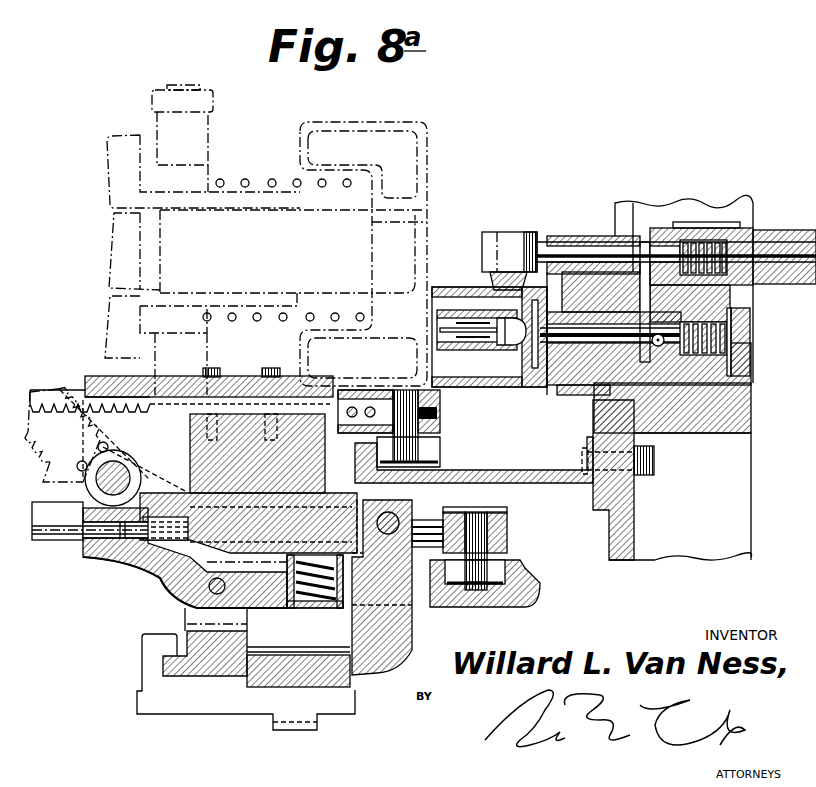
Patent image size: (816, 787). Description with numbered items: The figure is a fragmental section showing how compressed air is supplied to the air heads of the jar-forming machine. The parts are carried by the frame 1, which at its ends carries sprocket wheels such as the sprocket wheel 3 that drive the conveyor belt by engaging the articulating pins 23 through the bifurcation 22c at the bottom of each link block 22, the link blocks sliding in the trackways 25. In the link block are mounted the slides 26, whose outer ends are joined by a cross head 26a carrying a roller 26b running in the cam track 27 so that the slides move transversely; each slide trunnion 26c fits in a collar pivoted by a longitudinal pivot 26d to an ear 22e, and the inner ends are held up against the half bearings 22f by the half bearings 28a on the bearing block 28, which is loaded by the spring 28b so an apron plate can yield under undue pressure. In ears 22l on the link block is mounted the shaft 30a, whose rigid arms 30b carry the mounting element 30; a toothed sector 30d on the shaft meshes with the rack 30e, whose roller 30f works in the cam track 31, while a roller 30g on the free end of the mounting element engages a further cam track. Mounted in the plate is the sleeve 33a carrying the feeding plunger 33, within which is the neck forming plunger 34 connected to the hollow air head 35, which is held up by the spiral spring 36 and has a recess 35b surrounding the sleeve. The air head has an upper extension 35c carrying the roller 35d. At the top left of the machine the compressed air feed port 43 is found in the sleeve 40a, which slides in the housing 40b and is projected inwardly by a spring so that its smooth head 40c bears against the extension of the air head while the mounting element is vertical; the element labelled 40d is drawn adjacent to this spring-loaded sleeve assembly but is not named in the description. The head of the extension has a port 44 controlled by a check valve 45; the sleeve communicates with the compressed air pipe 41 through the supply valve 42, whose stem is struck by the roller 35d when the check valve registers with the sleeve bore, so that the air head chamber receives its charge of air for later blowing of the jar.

The frame 1 is at (738, 519).
The sprocket wheel 3 is at (273, 729).
The link block 22 is at (163, 667).
The bifurcation 22c is at (391, 620).
The ear 22e is at (389, 499).
The half bearing 22f is at (124, 560).
The ear 22l is at (87, 495).
The articulating pin 23 is at (262, 660).
The trackway 25 is at (156, 656).
The slide 26 is at (53, 533).
The cross head 26a is at (507, 518).
The roller 26b is at (507, 555).
The slide trunnion 26c is at (377, 499).
The longitudinal pivot 26d is at (458, 507).
The cam track 27 is at (520, 576).
The bearing block 28 is at (190, 579).
The half bearing 28a is at (85, 557).
The spring 28b is at (310, 596).
The mounting element 30 is at (197, 328).
The shaft 30a is at (118, 437).
The rigid arm 30b is at (48, 430).
The toothed sector 30d is at (77, 430).
The rack 30e is at (134, 400).
The roller 30f is at (423, 440).
The roller 30g is at (214, 100).
The cam track 31 is at (445, 460).
The feeding plunger 33 is at (121, 148).
The sleeve 33a is at (261, 200).
The neck forming plunger 34 is at (216, 216).
The air head 35 is at (391, 125).
The recess 35b is at (343, 175).
The upper extension 35c is at (475, 264).
The roller 35d is at (518, 245).
The spiral spring 36 is at (258, 310).
The sleeve 40a is at (672, 403).
The housing 40b is at (736, 396).
The head 40c is at (547, 392).
The spring cap 40d is at (733, 337).
The pipe 41 is at (764, 233).
The supply valve 42 is at (684, 280).
The compressed air feed port 43 is at (588, 346).
The port 44 is at (520, 360).
The check valve 45 is at (505, 346).